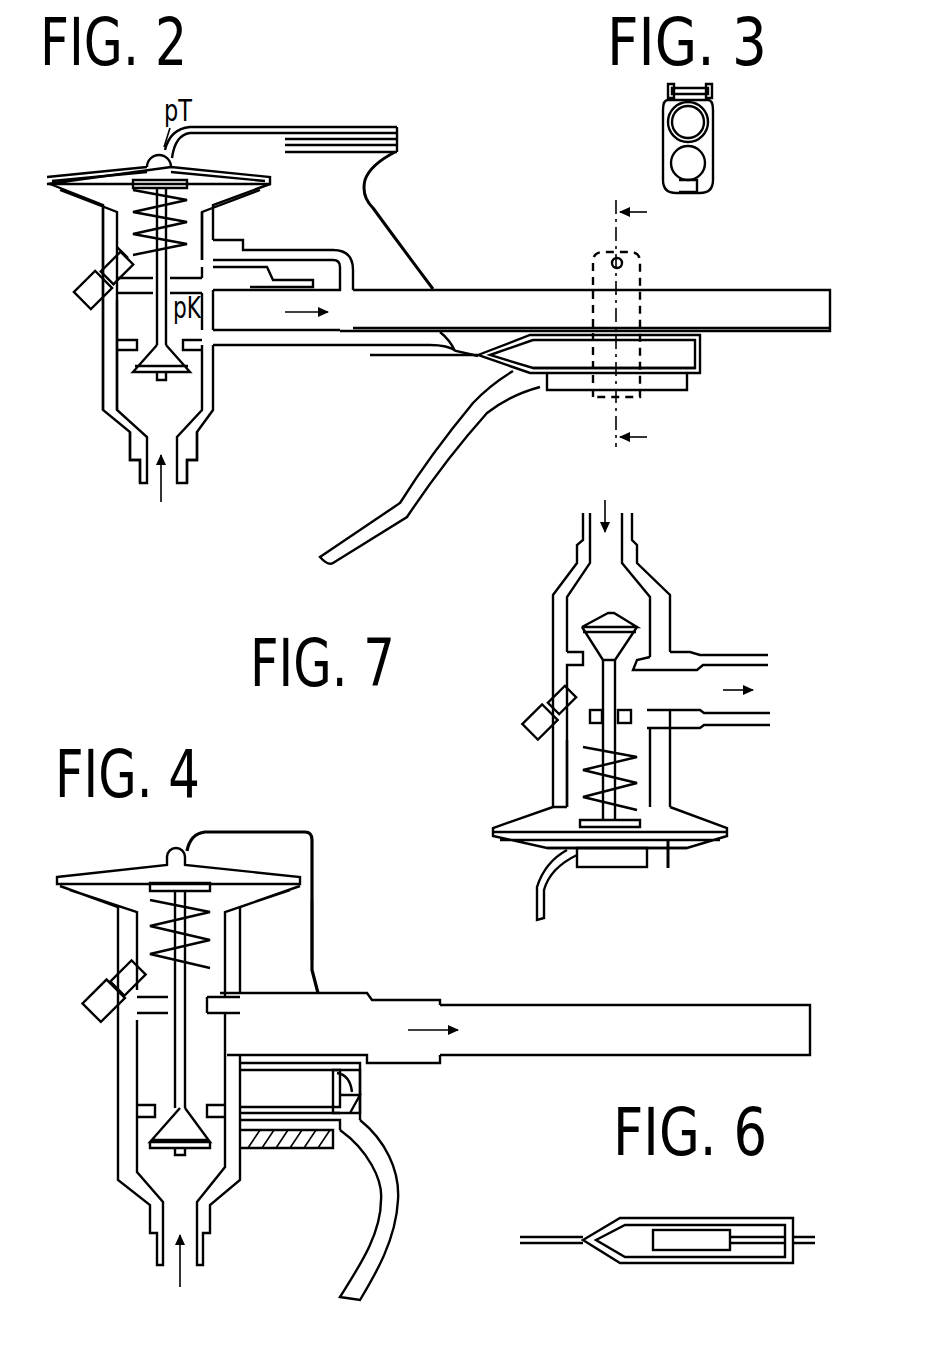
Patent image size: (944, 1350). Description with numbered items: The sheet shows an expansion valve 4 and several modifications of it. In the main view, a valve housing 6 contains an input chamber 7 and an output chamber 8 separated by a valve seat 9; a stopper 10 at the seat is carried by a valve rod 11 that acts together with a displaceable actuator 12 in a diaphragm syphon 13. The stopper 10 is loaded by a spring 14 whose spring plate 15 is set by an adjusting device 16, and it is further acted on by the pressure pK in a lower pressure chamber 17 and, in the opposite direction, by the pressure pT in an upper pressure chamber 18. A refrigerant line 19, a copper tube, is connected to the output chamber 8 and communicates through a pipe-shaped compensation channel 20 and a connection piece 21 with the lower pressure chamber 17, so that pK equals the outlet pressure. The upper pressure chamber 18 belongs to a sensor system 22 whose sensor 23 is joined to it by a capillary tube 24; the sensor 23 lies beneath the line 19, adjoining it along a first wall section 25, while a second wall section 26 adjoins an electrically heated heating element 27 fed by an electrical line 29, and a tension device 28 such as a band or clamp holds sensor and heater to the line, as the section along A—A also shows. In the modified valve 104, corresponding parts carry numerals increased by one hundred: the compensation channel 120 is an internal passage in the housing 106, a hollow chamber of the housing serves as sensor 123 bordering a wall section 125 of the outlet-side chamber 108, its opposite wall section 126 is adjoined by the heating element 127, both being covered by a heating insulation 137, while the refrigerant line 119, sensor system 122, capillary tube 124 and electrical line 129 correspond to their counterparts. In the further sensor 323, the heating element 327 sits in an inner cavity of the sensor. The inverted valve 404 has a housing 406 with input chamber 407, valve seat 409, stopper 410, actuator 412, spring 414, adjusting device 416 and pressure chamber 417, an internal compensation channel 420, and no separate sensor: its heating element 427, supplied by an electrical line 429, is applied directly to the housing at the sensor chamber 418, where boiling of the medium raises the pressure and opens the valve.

In FIG. 2, the expansion valve 4 is at (234, 400).
In FIG. 2, the valve housing 6 is at (130, 424).
In FIG. 2, the input chamber 7 is at (183, 404).
In FIG. 2, the output chamber 8 is at (123, 318).
In FIG. 2, the valve seat 9 is at (123, 346).
In FIG. 2, the stopper 10 is at (152, 370).
In FIG. 2, the valve rod 11 is at (93, 276).
In FIG. 2, the displaceable actuator 12 is at (118, 175).
In FIG. 2, the diaphragm syphon 13 is at (219, 157).
In FIG. 2, the spring 14 is at (135, 227).
In FIG. 2, the spring plate 15 is at (163, 252).
In FIG. 2, the adjusting device 16 is at (97, 287).
In FIG. 2, the lower pressure chamber 17 is at (230, 226).
In FIG. 2, the upper pressure chamber 18 is at (145, 163).
In FIG. 2, the refrigerant line 19 is at (485, 288).
In FIG. 3, the refrigerant line 19 is at (705, 121).
In FIG. 2, the compensation channel 20 is at (322, 248).
In FIG. 2, the connection piece 21 is at (245, 248).
In FIG. 2, the sensor system 22 is at (372, 118).
In FIG. 2, the sensor 23 is at (692, 355).
In FIG. 3, the sensor 23 is at (698, 167).
In FIG. 2, the capillary tube 24 is at (315, 128).
In FIG. 2, the first wall section 25 is at (668, 327).
In FIG. 2, the second wall section 26 is at (666, 375).
In FIG. 2, the heating element 27 is at (557, 384).
In FIG. 3, the heating element 27 is at (697, 185).
In FIG. 2, the tension device 28 is at (602, 254).
In FIG. 3, the tension device 28 is at (663, 143).
In FIG. 2, the electrical line 29 is at (389, 512).
In FIG. 4, the expansion valve 104 is at (106, 1076).
In FIG. 4, the valve housing 106 is at (126, 1160).
In FIG. 4, the outlet-side chamber 108 is at (320, 1024).
In FIG. 4, the refrigerant line 119 is at (550, 1003).
In FIG. 4, the compensation channel 120 is at (219, 1003).
In FIG. 4, the sensor system 122 is at (317, 910).
In FIG. 4, the sensor 123 is at (320, 1099).
In FIG. 4, the capillary tube 124 is at (288, 828).
In FIG. 4, the wall section 125 is at (323, 1060).
In FIG. 4, the wall section 126 is at (314, 1113).
In FIG. 4, the heating element 127 is at (290, 1122).
In FIG. 4, the electrical line 129 is at (396, 1215).
In FIG. 4, the heating insulation 137 is at (264, 1132).
In FIG. 6, the sensor 323 is at (728, 1217).
In FIG. 6, the heating element 327 is at (673, 1231).
In FIG. 7, the valve 404 is at (750, 590).
In FIG. 7, the housing 406 is at (668, 761).
In FIG. 7, the input chamber 407 is at (614, 592).
In FIG. 7, the valve seat 409 is at (570, 655).
In FIG. 7, the stopper 410 is at (598, 618).
In FIG. 7, the actuator 412 is at (697, 841).
In FIG. 7, the spring 414 is at (590, 774).
In FIG. 7, the adjusting device 416 is at (543, 713).
In FIG. 7, the pressure chamber 417 is at (577, 793).
In FIG. 7, the sensor chamber 418 is at (537, 849).
In FIG. 7, the compensation channel 420 is at (630, 722).
In FIG. 7, the heating element 427 is at (620, 862).
In FIG. 7, the electrical line 429 is at (545, 890).